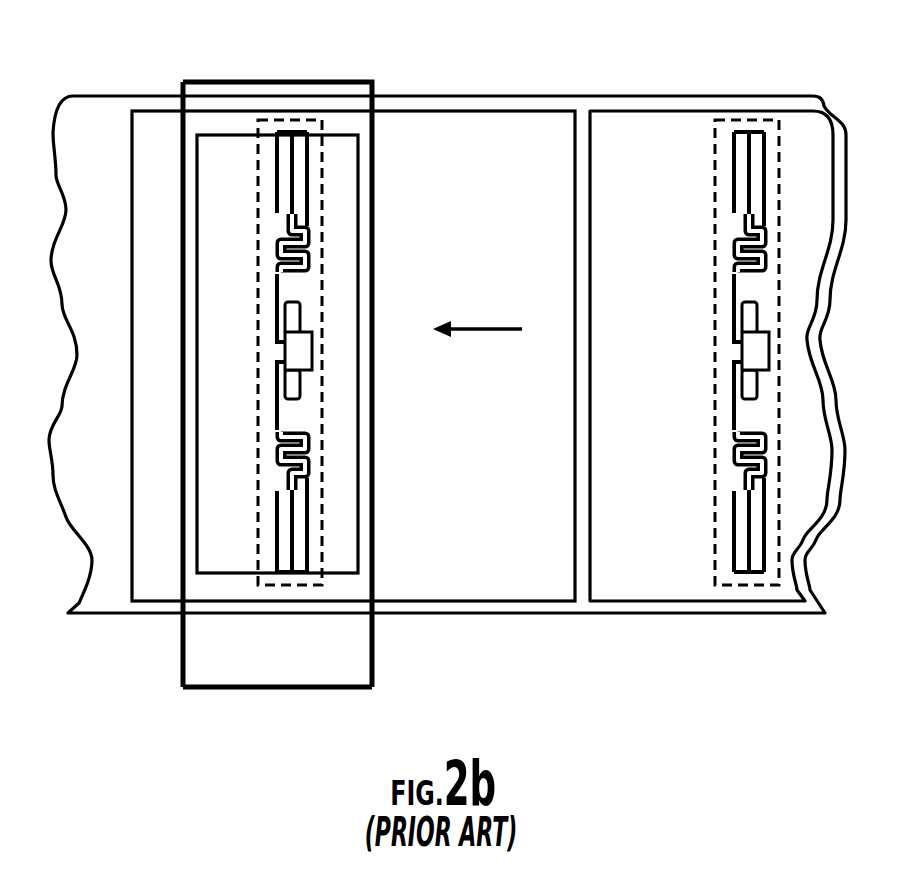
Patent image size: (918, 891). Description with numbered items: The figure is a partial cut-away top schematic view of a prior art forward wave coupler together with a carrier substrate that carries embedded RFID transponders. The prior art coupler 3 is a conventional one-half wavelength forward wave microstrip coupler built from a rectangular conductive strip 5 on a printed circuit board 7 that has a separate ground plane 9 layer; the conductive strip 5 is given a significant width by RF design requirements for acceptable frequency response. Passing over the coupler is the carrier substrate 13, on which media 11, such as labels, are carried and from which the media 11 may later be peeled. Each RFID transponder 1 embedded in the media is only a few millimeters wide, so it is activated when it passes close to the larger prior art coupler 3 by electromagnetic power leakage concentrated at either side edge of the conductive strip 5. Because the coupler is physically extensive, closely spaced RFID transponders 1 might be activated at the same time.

The RFID transponder 1 is at (310, 128).
The prior art coupler 3 is at (262, 82).
The conductive strip 5 is at (210, 153).
The printed circuit board 7 is at (182, 648).
The ground plane 9 is at (348, 637).
The media 11 is at (517, 572).
The carrier substrate 13 is at (513, 96).